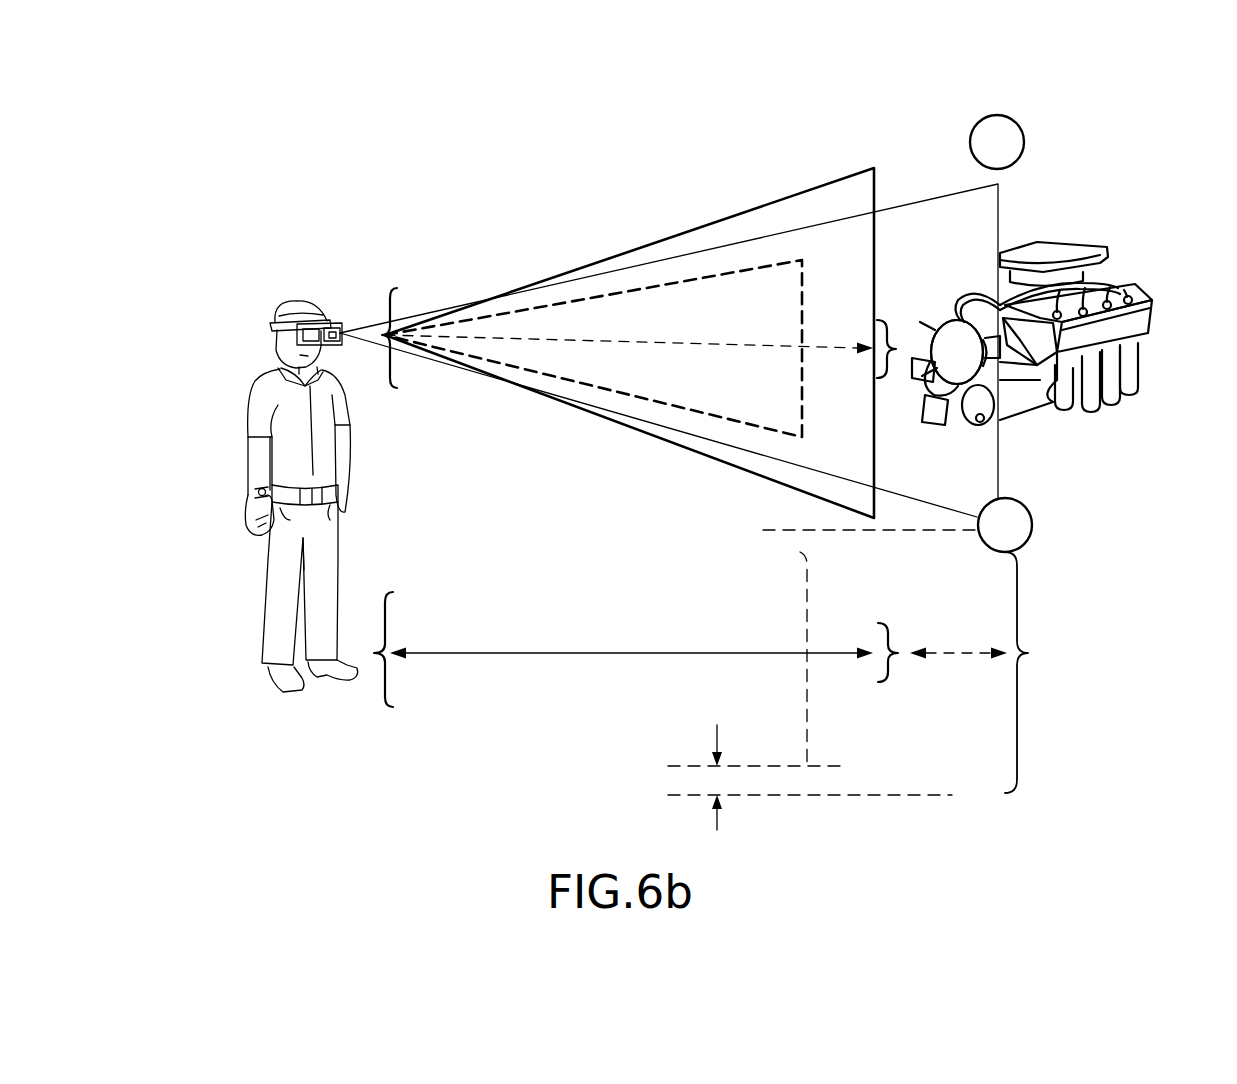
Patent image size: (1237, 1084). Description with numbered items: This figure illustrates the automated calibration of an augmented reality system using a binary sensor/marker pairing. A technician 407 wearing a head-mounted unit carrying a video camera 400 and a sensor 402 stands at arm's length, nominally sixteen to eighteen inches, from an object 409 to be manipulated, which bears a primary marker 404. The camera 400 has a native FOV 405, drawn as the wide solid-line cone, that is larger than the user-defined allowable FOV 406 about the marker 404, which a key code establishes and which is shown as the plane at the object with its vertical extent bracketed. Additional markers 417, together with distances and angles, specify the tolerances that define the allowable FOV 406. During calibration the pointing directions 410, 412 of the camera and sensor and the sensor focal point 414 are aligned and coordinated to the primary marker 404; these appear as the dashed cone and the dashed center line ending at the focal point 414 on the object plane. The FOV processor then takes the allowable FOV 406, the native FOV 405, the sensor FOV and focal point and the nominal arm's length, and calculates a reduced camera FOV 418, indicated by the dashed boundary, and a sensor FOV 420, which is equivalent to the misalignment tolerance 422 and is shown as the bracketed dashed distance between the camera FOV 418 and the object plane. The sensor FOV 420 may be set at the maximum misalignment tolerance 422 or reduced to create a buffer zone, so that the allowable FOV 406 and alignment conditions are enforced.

The video camera 400 is at (286, 338).
The sensor 402 is at (332, 322).
The primary marker 404 is at (957, 412).
The native FOV 405 is at (840, 184).
The allowable FOV 406 is at (988, 211).
The technician 407 is at (262, 466).
The object 409 is at (1148, 318).
The pointing direction of the camera 410 is at (629, 339).
The pointing direction of the sensor 412 is at (528, 321).
The sensor focal point 414 is at (862, 324).
The additional markers 417 is at (1018, 120).
The camera FOV 418 is at (805, 596).
The sensor FOV 420 is at (906, 608).
The misalignment tolerance 422 is at (717, 828).